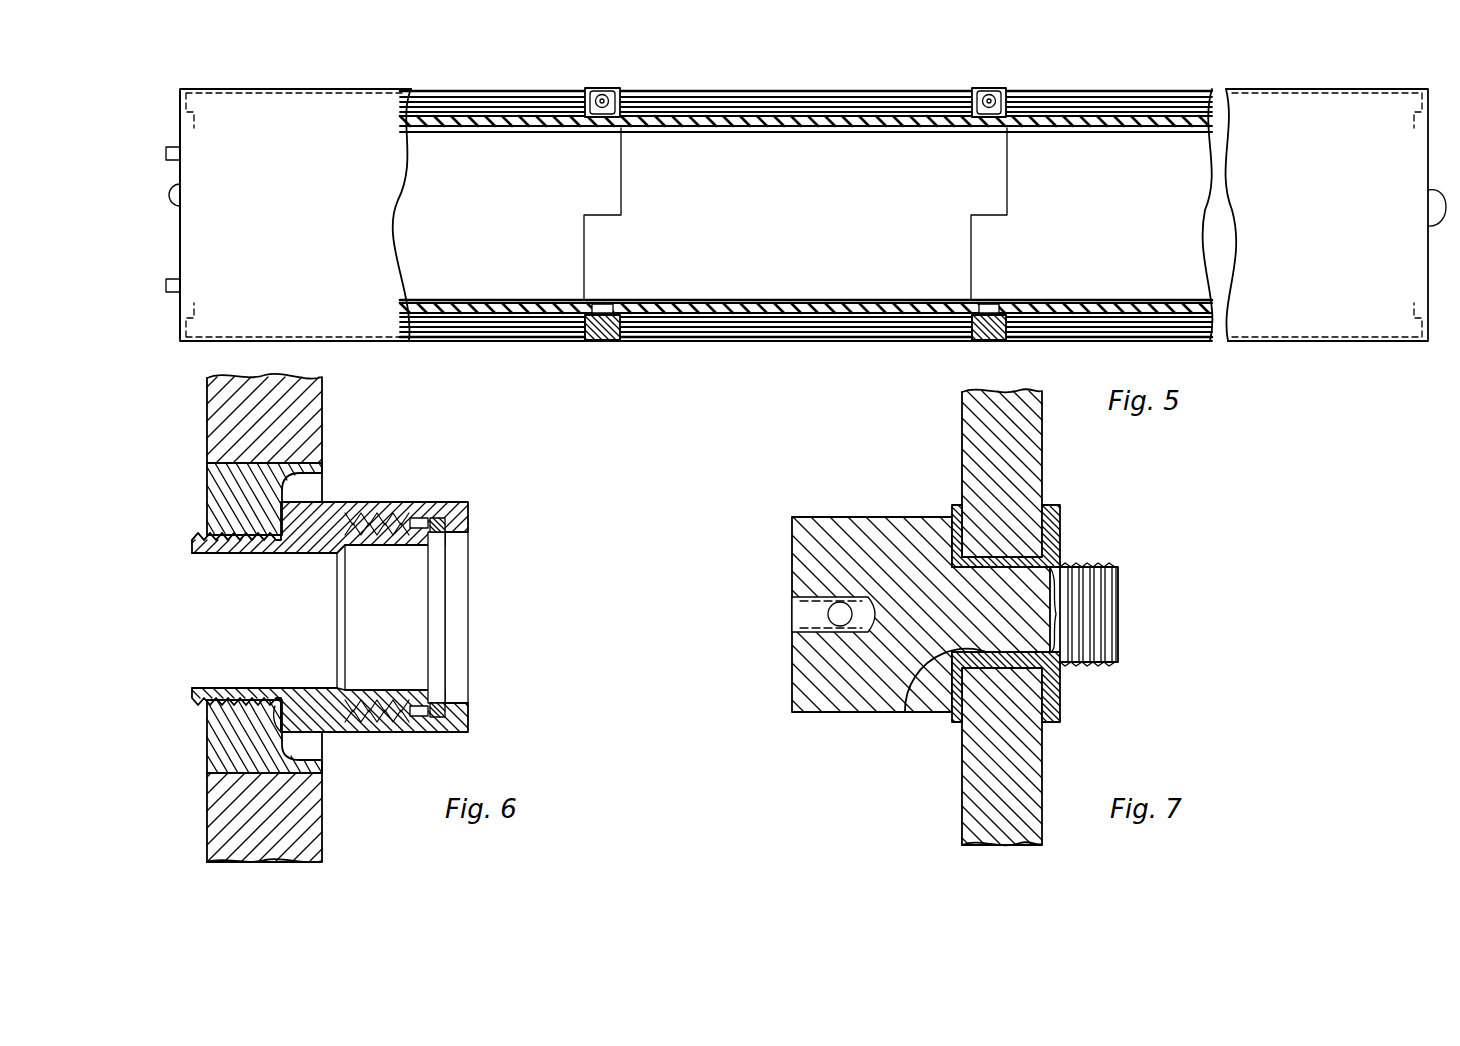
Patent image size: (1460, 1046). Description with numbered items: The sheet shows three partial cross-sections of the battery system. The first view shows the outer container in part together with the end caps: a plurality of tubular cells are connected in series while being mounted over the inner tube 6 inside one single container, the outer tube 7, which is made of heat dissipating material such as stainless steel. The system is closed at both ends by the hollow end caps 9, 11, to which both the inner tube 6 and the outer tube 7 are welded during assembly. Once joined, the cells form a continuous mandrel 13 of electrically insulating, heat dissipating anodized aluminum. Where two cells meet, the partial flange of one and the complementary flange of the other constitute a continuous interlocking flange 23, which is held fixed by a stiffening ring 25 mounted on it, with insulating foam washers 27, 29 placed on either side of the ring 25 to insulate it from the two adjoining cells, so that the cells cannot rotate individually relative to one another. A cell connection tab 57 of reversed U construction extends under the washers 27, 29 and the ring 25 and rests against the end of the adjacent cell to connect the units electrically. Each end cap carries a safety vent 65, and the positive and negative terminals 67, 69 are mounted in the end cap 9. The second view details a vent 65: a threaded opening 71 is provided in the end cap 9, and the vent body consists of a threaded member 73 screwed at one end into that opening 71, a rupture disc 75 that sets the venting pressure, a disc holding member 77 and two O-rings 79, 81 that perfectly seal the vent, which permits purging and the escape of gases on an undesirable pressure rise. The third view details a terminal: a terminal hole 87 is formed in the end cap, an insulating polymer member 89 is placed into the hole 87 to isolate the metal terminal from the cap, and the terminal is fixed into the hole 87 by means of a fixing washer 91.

In FIG. 5, the inner tube 6 is at (830, 128).
In FIG. 5, the outer tube 7 is at (332, 122).
In FIG. 5, the end cap 9 is at (178, 190).
In FIG. 6, the end cap 9 is at (298, 412).
In FIG. 7, the end cap 9 is at (1002, 617).
In FIG. 5, the end cap 11 is at (1430, 195).
In FIG. 5, the mandrel 13 is at (767, 306).
In FIG. 5, the interlocking flange 23 is at (612, 129).
In FIG. 5, the stiffening ring 25 is at (606, 342).
In FIG. 5, the insulating foam washer 27 is at (616, 341).
In FIG. 5, the insulating foam washer 29 is at (604, 341).
In FIG. 5, the cell connection tab 57 is at (614, 316).
In FIG. 6, the safety vent 65 is at (365, 471).
In FIG. 5, the positive terminal 67 is at (181, 136).
In FIG. 7, the positive terminal 67 is at (840, 713).
In FIG. 5, the negative terminal 69 is at (178, 262).
In FIG. 6, the threaded opening 71 is at (192, 530).
In FIG. 6, the threaded member 73 is at (238, 688).
In FIG. 6, the rupture disc 75 is at (448, 612).
In FIG. 6, the disc holding member 77 is at (440, 733).
In FIG. 6, the O-ring 79 is at (446, 698).
In FIG. 6, the O-ring 81 is at (281, 706).
In FIG. 7, the terminal hole 87 is at (906, 712).
In FIG. 7, the insulating polymer member 89 is at (950, 722).
In FIG. 7, the fixing washer 91 is at (1060, 522).